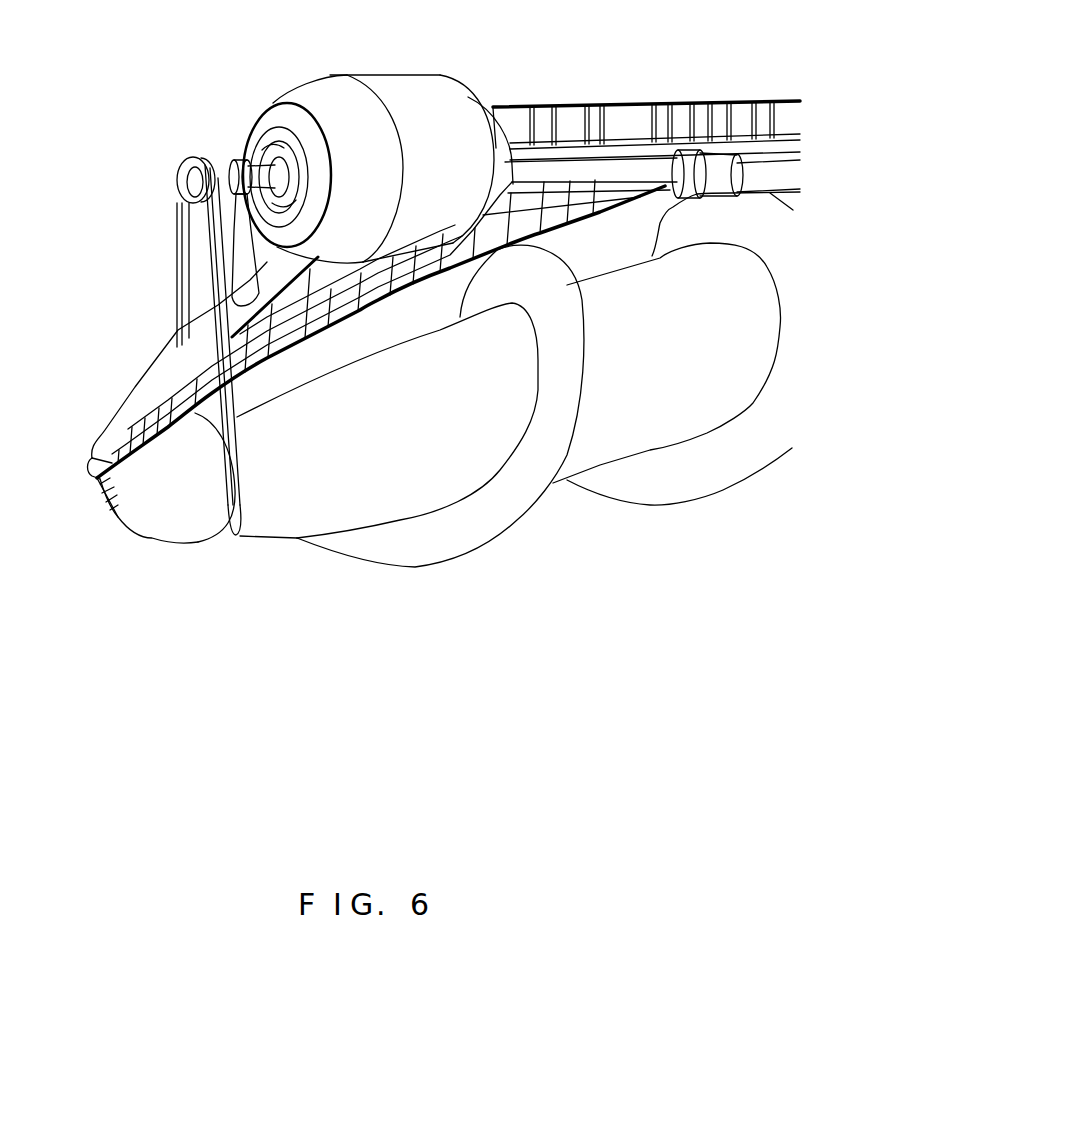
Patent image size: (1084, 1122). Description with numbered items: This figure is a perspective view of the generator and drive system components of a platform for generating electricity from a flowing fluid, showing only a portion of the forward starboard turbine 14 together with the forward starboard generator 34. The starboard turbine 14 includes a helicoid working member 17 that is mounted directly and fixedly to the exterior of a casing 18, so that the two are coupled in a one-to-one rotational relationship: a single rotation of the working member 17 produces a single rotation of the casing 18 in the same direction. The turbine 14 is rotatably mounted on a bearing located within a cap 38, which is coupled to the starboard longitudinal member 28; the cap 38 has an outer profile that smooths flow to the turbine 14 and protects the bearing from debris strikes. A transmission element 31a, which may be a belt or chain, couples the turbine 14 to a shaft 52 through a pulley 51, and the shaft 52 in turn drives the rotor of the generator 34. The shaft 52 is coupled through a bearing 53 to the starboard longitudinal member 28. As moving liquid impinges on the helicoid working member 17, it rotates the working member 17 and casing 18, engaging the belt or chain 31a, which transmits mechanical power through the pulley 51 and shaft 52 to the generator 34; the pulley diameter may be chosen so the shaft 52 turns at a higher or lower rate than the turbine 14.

The forward starboard turbine 14 is at (665, 370).
The helicoid working member 17 is at (428, 567).
The casing 18 is at (275, 513).
The starboard longitudinal member 28 is at (133, 388).
The transmission element 31a is at (175, 262).
The forward starboard generator 34 is at (385, 74).
The cap 38 is at (152, 520).
The pulley 51 is at (176, 185).
The shaft 52 is at (225, 160).
The bearing 53 is at (240, 180).